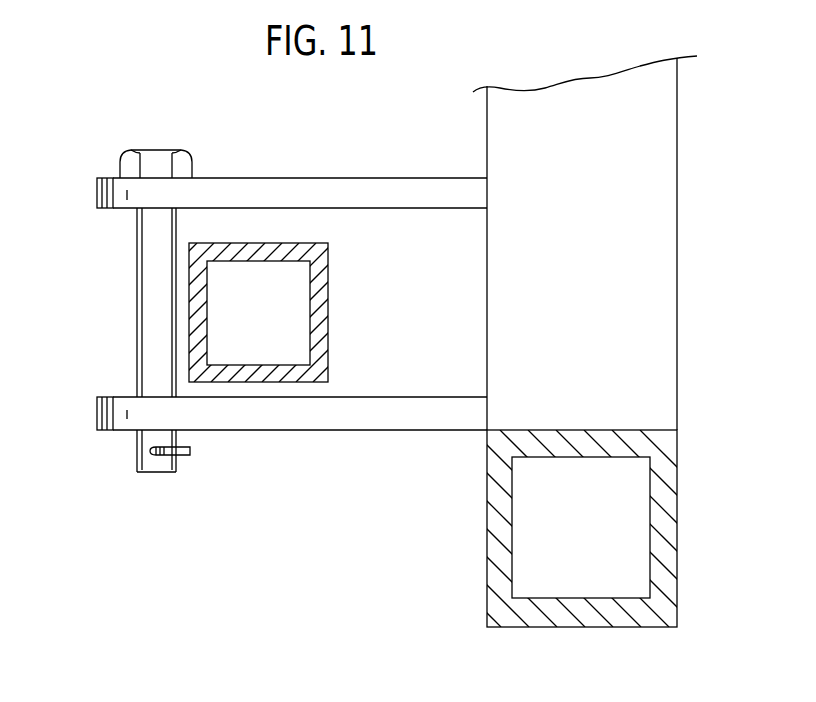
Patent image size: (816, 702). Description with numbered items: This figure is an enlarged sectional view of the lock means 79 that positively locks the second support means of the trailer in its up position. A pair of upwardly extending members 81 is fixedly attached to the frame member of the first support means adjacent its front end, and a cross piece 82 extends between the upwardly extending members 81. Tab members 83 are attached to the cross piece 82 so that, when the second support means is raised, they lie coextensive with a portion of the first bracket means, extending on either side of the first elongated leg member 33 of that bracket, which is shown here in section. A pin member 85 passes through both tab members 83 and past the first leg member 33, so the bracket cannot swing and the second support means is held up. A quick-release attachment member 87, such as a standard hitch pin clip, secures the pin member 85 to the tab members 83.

The lock means 79 is at (102, 465).
The upwardly extending member 81 is at (675, 566).
The cross piece 82 is at (660, 294).
The tab member 83 is at (110, 195).
The pin member 85 is at (150, 170).
The quick-release attachment member 87 is at (190, 452).
The first elongated leg member 33 is at (320, 312).